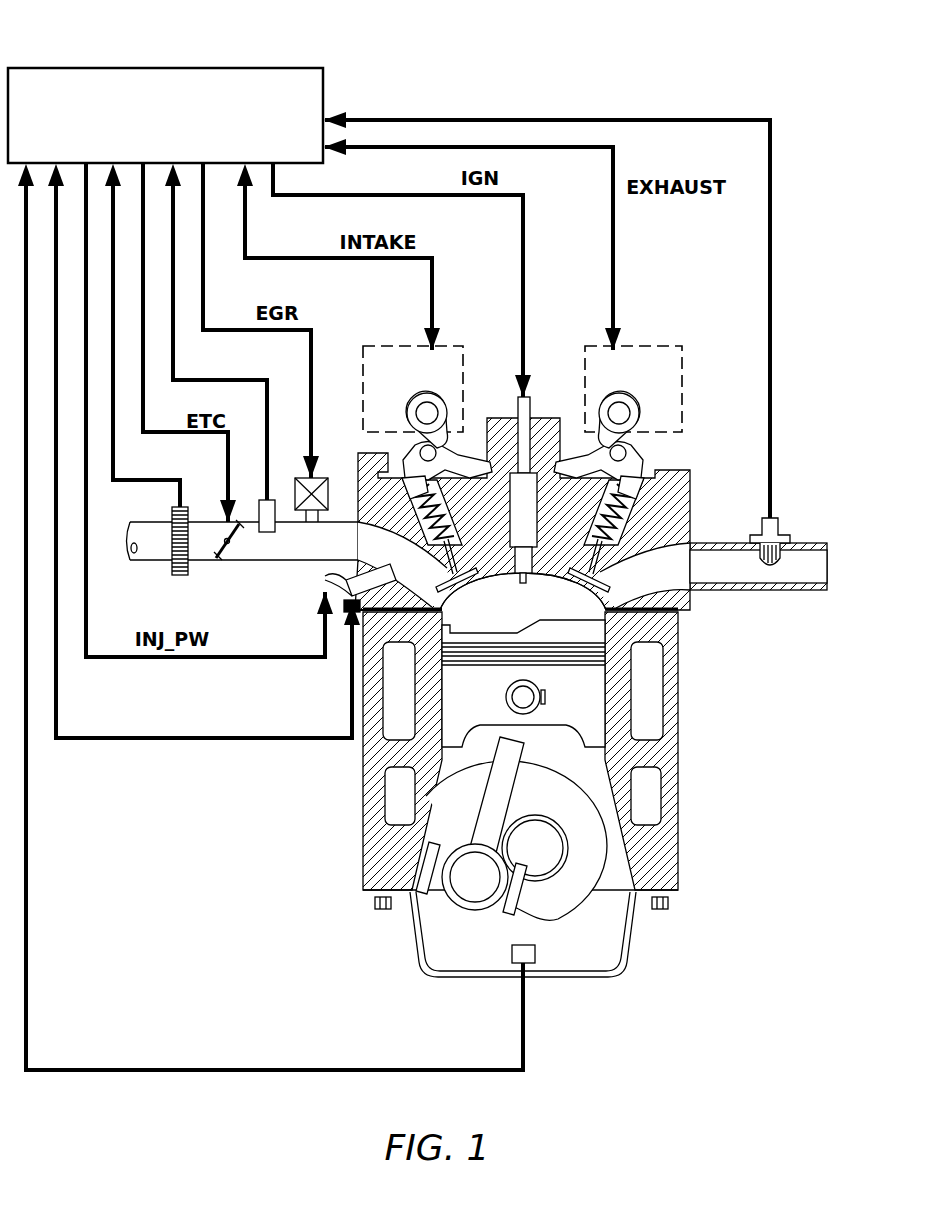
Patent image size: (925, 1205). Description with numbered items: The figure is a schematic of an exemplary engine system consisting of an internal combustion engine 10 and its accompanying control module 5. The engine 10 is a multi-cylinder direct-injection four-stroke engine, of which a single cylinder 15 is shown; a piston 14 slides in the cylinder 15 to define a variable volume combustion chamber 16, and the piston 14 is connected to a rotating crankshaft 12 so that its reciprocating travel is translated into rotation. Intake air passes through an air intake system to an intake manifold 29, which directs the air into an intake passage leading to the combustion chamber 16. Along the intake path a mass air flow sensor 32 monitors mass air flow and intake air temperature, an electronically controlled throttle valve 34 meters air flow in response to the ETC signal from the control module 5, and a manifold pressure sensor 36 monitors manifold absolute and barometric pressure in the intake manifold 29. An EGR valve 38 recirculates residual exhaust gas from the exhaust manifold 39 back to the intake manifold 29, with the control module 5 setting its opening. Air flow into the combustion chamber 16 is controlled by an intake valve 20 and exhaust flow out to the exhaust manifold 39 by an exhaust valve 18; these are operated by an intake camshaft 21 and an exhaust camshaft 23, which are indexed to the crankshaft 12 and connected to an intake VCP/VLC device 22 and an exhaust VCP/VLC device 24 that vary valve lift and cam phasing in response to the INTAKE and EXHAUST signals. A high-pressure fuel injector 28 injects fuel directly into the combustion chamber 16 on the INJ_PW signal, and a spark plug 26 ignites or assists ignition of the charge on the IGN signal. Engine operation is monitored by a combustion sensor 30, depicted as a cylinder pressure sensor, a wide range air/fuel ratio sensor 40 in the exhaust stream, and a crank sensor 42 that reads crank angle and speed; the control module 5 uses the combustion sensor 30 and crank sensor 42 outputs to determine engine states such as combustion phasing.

The control module 5 is at (279, 68).
The internal combustion engine 10 is at (684, 756).
The crankshaft 12 is at (578, 905).
The piston 14 is at (523, 683).
The cylinder 15 is at (608, 626).
The combustion chamber 16 is at (523, 597).
The exhaust valve 18 is at (590, 580).
The intake valve 20 is at (437, 562).
The intake camshaft 21 is at (430, 413).
The intake variable cam phasing/variable lift control device 22 is at (445, 347).
The exhaust camshaft 23 is at (620, 415).
The exhaust variable cam phasing/variable lift control device 24 is at (672, 408).
The spark plug 26 is at (527, 398).
The fuel injector 28 is at (340, 578).
The intake manifold 29 is at (340, 520).
The combustion sensor 30 is at (348, 620).
The mass air flow sensor 32 is at (180, 575).
The throttle valve 34 is at (222, 553).
The manifold pressure sensor 36 is at (267, 533).
The EGR valve 38 is at (306, 512).
The exhaust manifold 39 is at (715, 543).
The wide range air/fuel ratio sensor 40 is at (775, 530).
The crank sensor 42 is at (516, 955).